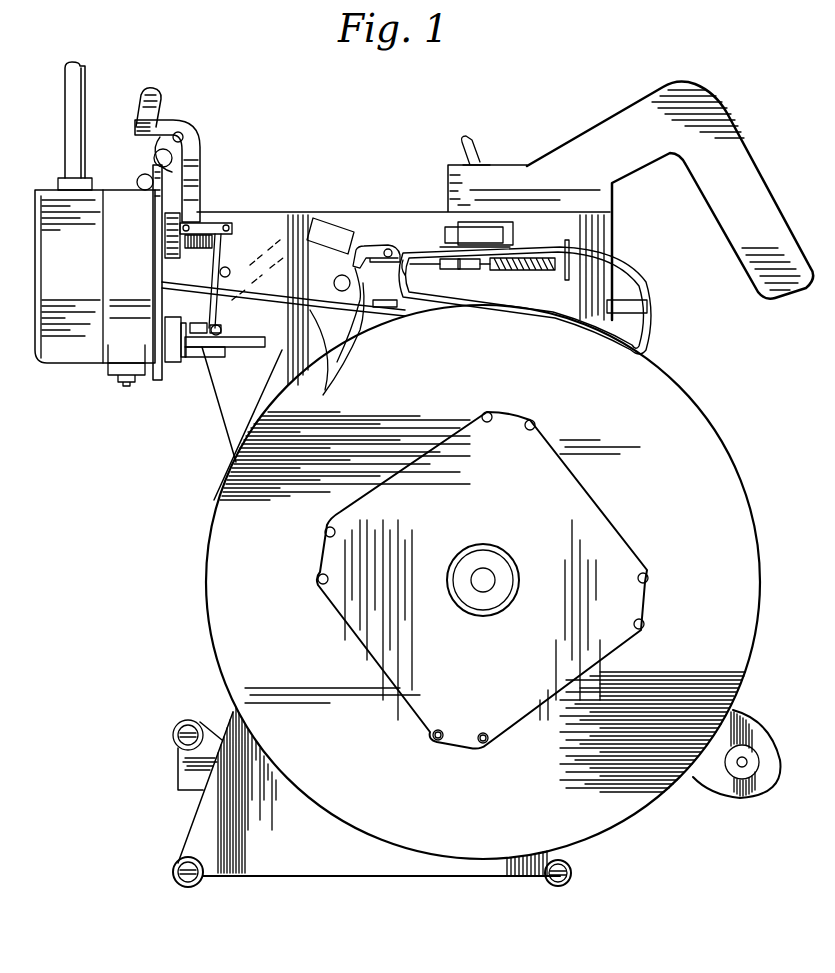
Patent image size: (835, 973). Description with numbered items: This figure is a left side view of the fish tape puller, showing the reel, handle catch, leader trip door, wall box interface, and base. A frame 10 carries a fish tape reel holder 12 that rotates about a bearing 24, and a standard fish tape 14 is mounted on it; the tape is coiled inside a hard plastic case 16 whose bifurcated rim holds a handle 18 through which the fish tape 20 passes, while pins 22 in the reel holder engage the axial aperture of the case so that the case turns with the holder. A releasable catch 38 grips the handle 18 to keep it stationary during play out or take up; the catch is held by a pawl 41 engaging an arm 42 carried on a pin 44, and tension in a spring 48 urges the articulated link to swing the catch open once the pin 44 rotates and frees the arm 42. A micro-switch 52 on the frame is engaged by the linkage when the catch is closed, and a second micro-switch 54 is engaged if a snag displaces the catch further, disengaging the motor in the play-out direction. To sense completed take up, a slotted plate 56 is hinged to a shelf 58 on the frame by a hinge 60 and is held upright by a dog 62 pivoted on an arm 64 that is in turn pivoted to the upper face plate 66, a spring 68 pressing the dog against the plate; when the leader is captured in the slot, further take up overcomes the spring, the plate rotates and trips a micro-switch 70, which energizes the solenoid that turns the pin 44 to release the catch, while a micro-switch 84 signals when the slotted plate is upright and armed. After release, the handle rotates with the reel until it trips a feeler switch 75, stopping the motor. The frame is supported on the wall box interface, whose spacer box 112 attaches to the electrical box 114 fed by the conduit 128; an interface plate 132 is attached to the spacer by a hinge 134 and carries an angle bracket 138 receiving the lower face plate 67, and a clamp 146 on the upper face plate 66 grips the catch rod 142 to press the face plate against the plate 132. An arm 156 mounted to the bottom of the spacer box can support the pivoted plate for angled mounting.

The frame 10 is at (230, 448).
The fish tape reel holder 12 is at (593, 528).
The fish tape 14 is at (762, 558).
The hard plastic case 16 is at (678, 410).
The handle 18 is at (645, 287).
The fish tape 20 is at (233, 452).
The pins 22 is at (480, 745).
The bearing 24 is at (462, 612).
The releasable catch 38 is at (405, 272).
The pawl 41 is at (362, 265).
The arm 42 is at (358, 292).
The pin 44 is at (312, 312).
The spring 48 is at (530, 275).
The micro-switch 52 is at (470, 225).
The micro-switch 54 is at (500, 225).
The slotted plate 56 is at (300, 215).
The shelf 58 is at (245, 403).
The hinge 60 is at (220, 328).
The dog 62 is at (232, 250).
The arm 64 is at (212, 224).
The face plate 66 is at (210, 262).
The lower face plate 67 is at (210, 293).
The spring 68 is at (228, 257).
The micro-switch 70 is at (337, 220).
The feeler switch 75 is at (748, 745).
The micro-switch 84 is at (295, 268).
The spacer box 112 is at (113, 190).
The electrical box 114 is at (72, 365).
The conduit 128 is at (88, 75).
The plate 132 is at (157, 380).
The hinge 134 is at (143, 174).
The angle bracket 138 is at (173, 383).
The catch rod 142 is at (192, 125).
The clamp 146 is at (195, 131).
The arm 156 is at (112, 375).